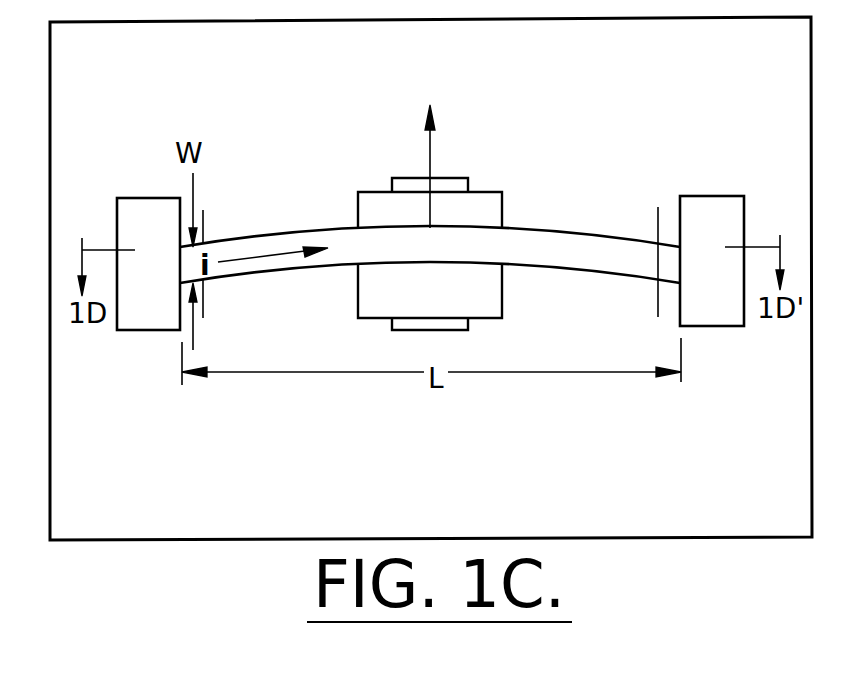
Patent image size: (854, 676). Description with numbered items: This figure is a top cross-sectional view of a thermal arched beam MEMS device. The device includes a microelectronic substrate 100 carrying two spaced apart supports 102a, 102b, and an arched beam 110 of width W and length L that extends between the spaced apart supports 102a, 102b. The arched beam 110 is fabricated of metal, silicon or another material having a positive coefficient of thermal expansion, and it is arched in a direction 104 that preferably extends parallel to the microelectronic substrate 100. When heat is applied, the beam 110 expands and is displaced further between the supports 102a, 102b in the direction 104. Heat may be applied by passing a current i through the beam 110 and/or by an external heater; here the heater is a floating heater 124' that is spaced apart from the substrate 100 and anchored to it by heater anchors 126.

The microelectronic substrate 100 is at (126, 75).
The spaced apart support 102a is at (119, 233).
The spaced apart support 102b is at (679, 230).
The direction 104 is at (391, 166).
The arched beam 110 is at (430, 194).
The floating heater 124' is at (430, 255).
The heater anchor 126 is at (397, 183).